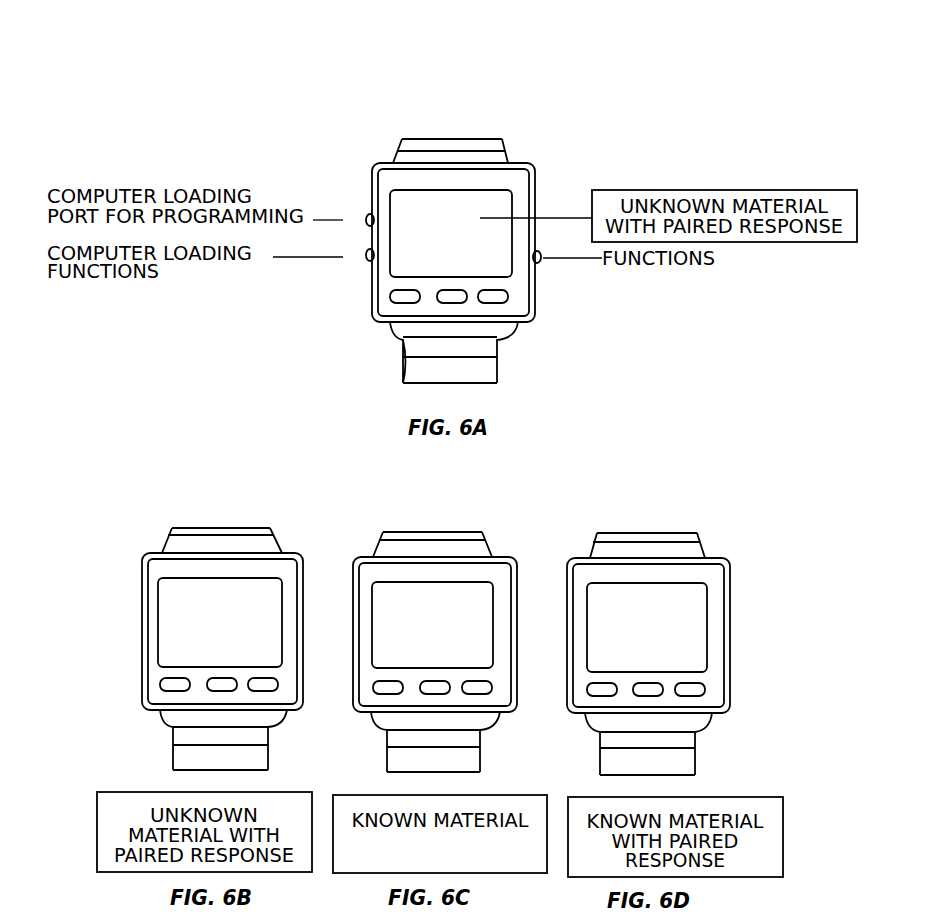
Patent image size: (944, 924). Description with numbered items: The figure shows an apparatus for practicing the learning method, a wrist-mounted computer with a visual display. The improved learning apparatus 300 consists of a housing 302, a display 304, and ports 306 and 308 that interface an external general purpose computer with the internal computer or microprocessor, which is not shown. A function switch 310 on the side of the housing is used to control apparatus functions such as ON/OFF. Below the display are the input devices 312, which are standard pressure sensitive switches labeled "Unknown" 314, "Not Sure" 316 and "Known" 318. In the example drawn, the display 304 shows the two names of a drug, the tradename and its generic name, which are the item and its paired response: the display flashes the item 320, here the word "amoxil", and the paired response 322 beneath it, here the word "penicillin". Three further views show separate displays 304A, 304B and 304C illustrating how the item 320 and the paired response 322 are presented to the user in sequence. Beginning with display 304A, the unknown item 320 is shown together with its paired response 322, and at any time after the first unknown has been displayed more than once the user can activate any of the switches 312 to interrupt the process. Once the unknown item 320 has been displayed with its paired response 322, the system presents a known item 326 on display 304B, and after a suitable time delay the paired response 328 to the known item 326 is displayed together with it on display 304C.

In FIG. 6A, the improved learning apparatus 300 is at (478, 128).
In FIG. 6A, the housing 302 is at (392, 173).
In FIG. 6A, the display 304 is at (503, 195).
In FIG. 6A, the port 306 is at (369, 208).
In FIG. 6A, the port 308 is at (367, 262).
In FIG. 6A, the function switch 310 is at (542, 253).
In FIG. 6A, the input devices 312 is at (380, 315).
In FIG. 6B, the input devices 312 is at (147, 688).
In FIG. 6A, the Unknown switch 314 is at (405, 303).
In FIG. 6A, the Not Sure switch 316 is at (452, 303).
In FIG. 6A, the Known switch 318 is at (493, 303).
In FIG. 6A, the item 320 is at (408, 200).
In FIG. 6A, the paired response 322 is at (503, 222).
In FIG. 6B, the display 304A is at (167, 585).
In FIG. 6C, the display 304B is at (382, 588).
In FIG. 6D, the display 304C is at (695, 605).
In FIG. 6C, the known item 326 is at (438, 612).
In FIG. 6D, the known item 326 is at (617, 588).
In FIG. 6D, the paired response 328 is at (688, 637).